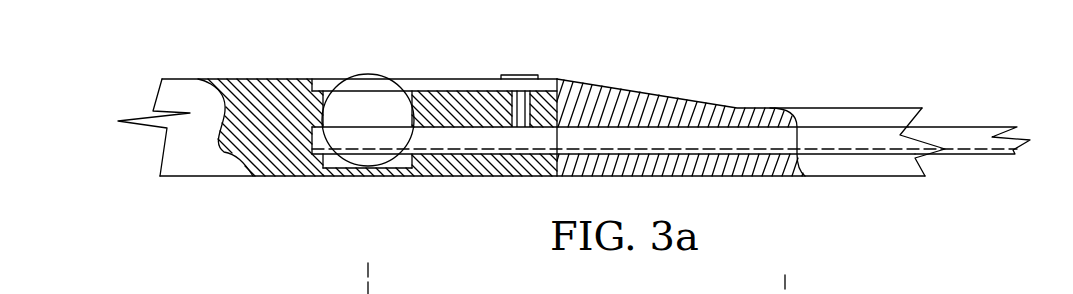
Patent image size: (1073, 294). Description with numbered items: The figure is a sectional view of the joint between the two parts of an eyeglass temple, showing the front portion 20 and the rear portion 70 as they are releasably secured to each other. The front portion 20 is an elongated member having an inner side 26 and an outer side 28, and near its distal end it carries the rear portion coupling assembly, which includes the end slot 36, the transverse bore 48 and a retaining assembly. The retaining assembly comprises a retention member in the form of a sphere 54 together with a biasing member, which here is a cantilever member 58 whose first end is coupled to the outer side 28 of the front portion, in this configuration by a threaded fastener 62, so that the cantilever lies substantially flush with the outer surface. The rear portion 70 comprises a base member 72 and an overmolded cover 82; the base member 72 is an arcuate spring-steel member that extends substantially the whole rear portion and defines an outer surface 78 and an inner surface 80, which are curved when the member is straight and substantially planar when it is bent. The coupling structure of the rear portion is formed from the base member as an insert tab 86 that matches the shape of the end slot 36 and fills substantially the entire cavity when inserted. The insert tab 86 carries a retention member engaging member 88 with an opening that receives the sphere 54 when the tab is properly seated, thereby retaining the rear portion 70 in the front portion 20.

The front portion 20 is at (261, 188).
The inner side 26 is at (415, 177).
The outer side 28 is at (223, 79).
The end slot 36 is at (479, 119).
The transverse bore 48 is at (375, 116).
The sphere 54 is at (320, 83).
The cantilever member 58 is at (432, 68).
The threaded fastener 62 is at (518, 75).
The rear portion 70 is at (776, 77).
The base member 72 is at (988, 114).
The outer surface 78 is at (937, 127).
The inner surface 80 is at (945, 150).
The overmolded cover 82 is at (736, 97).
The insert tab 86 is at (465, 168).
The retention member engaging member 88 is at (358, 162).